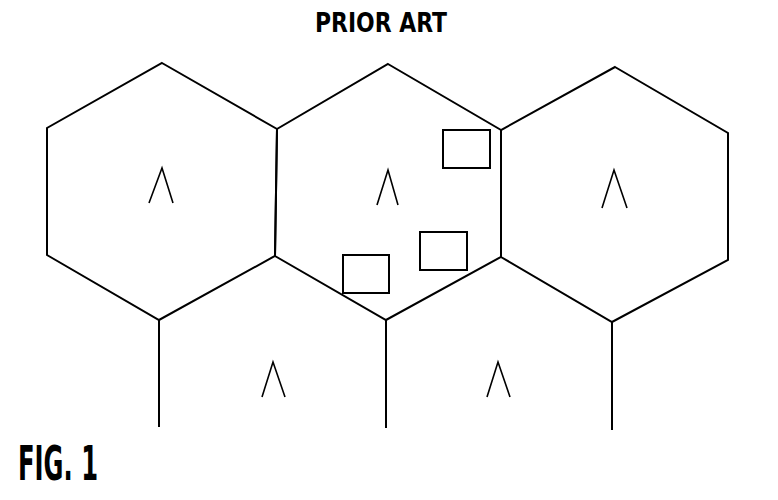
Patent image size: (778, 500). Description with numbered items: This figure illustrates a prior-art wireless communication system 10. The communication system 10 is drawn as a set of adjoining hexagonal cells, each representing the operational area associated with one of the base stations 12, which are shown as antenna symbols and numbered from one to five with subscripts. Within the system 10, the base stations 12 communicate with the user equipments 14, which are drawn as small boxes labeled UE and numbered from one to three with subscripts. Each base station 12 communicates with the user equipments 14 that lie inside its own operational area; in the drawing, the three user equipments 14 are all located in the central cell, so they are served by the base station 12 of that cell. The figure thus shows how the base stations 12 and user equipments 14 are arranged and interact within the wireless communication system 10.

The wireless communication system 10 is at (630, 54).
The base station 12 is at (411, 283).
The user equipment 14 is at (392, 202).